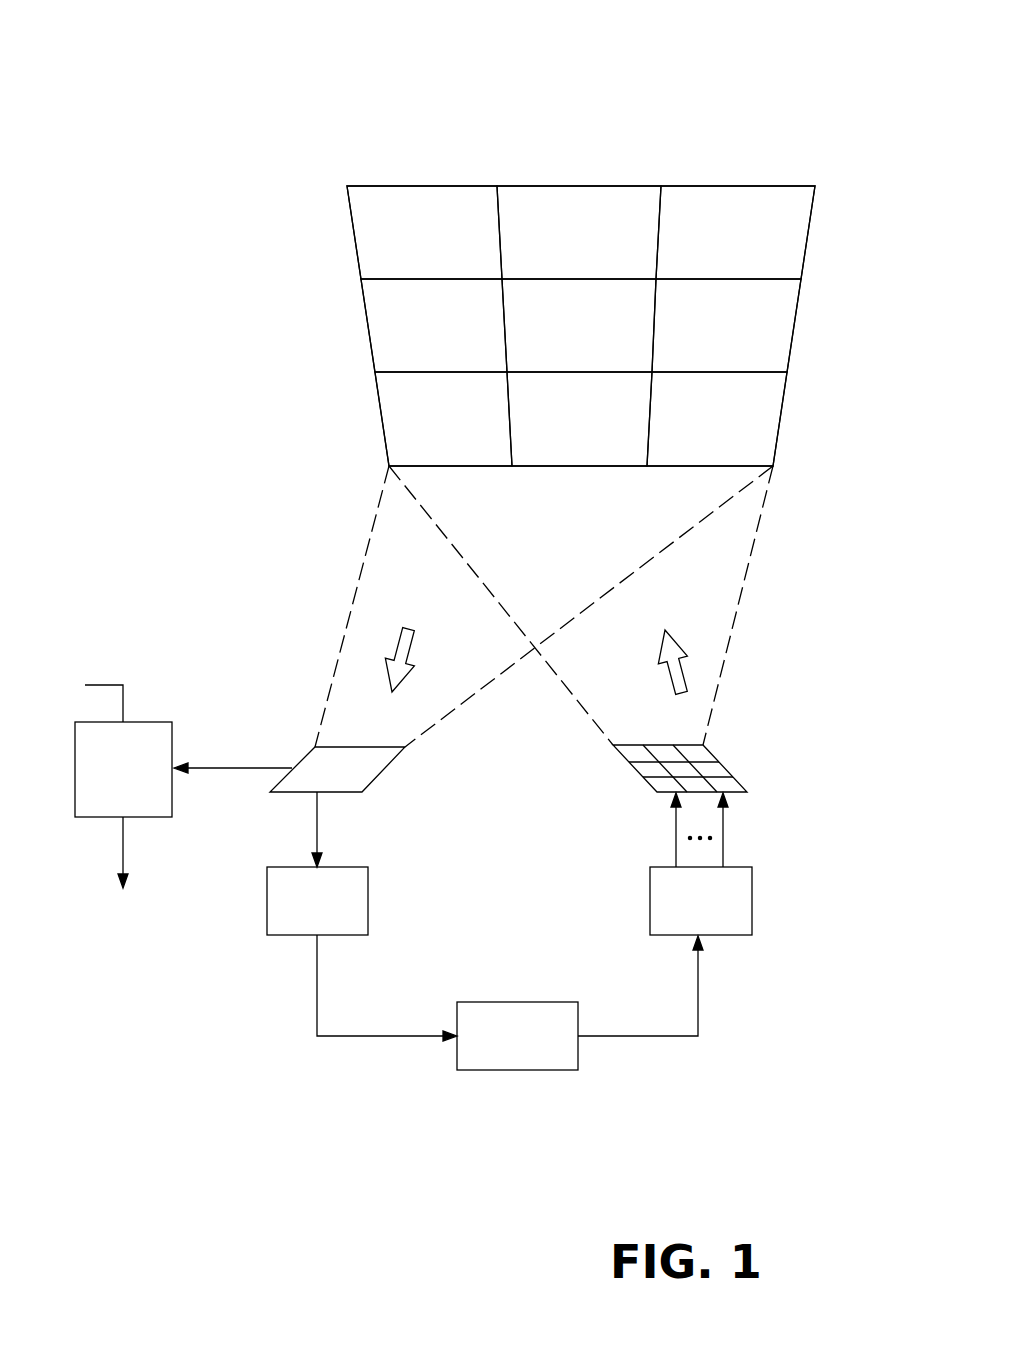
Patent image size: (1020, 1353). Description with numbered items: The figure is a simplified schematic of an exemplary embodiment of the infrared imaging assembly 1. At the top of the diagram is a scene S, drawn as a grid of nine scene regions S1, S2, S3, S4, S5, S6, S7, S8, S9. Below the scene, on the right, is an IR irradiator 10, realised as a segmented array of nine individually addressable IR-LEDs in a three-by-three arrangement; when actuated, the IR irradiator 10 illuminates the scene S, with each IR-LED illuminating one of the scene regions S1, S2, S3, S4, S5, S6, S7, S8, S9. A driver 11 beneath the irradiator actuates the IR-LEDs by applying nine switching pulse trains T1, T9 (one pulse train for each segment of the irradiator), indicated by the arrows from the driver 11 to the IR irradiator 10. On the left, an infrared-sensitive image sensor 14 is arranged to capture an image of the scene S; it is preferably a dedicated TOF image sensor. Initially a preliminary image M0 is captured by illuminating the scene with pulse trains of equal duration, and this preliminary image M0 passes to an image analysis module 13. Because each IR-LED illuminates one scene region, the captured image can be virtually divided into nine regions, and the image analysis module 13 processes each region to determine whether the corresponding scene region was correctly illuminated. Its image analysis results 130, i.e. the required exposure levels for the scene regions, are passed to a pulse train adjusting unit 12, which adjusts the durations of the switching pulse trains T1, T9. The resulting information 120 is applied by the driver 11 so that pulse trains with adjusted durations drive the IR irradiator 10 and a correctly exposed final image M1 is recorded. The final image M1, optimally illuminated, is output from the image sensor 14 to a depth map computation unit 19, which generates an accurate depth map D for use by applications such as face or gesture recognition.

The infrared imaging assembly 1 is at (710, 1100).
The scene S is at (258, 146).
The scene region S1 is at (390, 207).
The scene region S2 is at (578, 207).
The scene region S3 is at (745, 207).
The scene region S4 is at (397, 326).
The scene region S5 is at (579, 325).
The scene region S6 is at (757, 327).
The scene region S7 is at (412, 432).
The scene region S8 is at (570, 466).
The scene region S9 is at (737, 423).
The IR irradiator 10 is at (727, 767).
The driver 11 is at (752, 898).
The pulse train adjusting unit 12 is at (520, 1070).
The image analysis module 13 is at (368, 903).
The image sensor 14 is at (362, 768).
The depth map computation unit 19 is at (116, 735).
The switching pulse train T1 is at (675, 835).
The switching pulse train T9 is at (724, 835).
The preliminary image M0 is at (317, 827).
The final image M1 is at (247, 768).
The depth map D is at (123, 847).
The information 120 is at (698, 1012).
The image analysis results 130 is at (362, 1036).